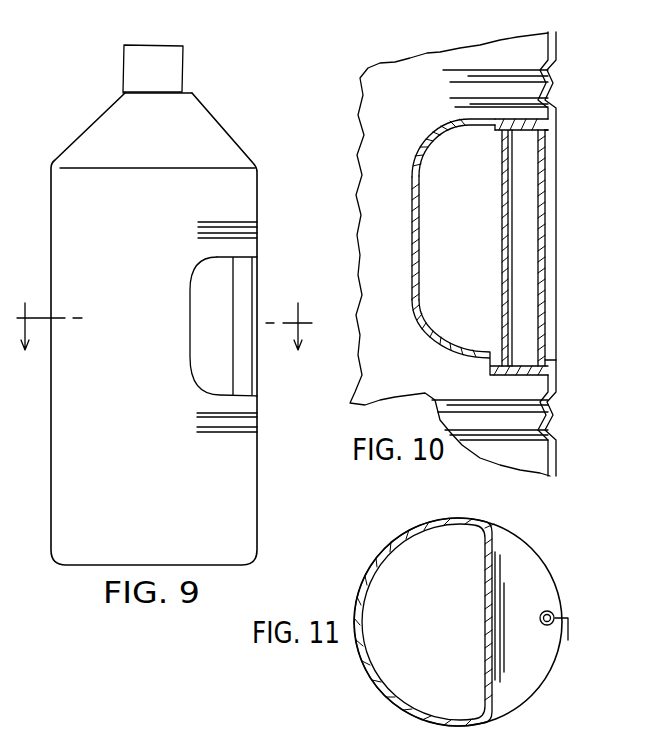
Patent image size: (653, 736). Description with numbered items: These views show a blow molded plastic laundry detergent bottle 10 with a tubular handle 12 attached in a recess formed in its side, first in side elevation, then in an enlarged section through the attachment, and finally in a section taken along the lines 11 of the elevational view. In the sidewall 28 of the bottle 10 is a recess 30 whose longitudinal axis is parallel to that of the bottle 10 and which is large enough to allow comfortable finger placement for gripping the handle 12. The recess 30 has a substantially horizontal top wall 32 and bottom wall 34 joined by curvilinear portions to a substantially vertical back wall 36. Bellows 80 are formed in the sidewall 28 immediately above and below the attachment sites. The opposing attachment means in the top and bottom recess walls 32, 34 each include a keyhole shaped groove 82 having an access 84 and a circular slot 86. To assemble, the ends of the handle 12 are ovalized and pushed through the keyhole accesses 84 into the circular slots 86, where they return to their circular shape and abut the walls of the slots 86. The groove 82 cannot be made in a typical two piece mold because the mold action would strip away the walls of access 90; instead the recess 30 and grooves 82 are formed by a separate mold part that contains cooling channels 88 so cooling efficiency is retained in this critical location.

In FIG. 9, the bottle 10 is at (107, 218).
In FIG. 9, the section lines 11— 11 is at (163, 313).
In FIG. 9, the handle 12 is at (233, 320).
In FIG. 10, the handle 12 is at (543, 226).
In FIG. 11, the handle 12 is at (540, 612).
In FIG. 11, the sidewall 28 is at (413, 525).
In FIG. 10, the recess 30 is at (456, 228).
In FIG. 10, the top wall 32 is at (470, 124).
In FIG. 10, the bottom wall 34 is at (481, 355).
In FIG. 11, the bottom wall 34 is at (518, 558).
In FIG. 10, the back wall 36 is at (412, 245).
In FIG. 11, the back wall 36 is at (505, 688).
In FIG. 9, the bellows 80 is at (228, 222).
In FIG. 10, the bellows 80 is at (512, 72).
In FIG. 10, the keyhole shaped groove 82 is at (487, 118).
In FIG. 10, the access 84 is at (503, 178).
In FIG. 11, the access 84 is at (568, 640).
In FIG. 10, the circular slot 86 is at (513, 147).
In FIG. 11, the circular slot 86 is at (540, 620).
In FIG. 11, the cooling channels 88 is at (553, 608).
In FIG. 10, the access walls 90 is at (543, 140).